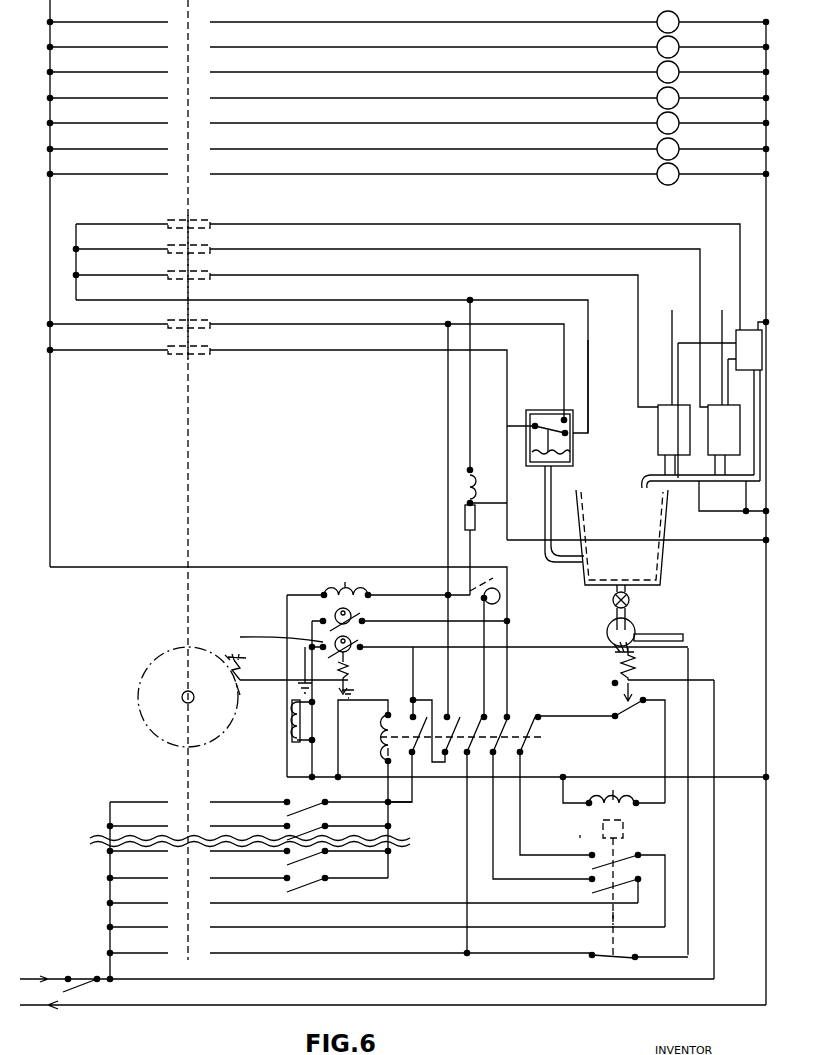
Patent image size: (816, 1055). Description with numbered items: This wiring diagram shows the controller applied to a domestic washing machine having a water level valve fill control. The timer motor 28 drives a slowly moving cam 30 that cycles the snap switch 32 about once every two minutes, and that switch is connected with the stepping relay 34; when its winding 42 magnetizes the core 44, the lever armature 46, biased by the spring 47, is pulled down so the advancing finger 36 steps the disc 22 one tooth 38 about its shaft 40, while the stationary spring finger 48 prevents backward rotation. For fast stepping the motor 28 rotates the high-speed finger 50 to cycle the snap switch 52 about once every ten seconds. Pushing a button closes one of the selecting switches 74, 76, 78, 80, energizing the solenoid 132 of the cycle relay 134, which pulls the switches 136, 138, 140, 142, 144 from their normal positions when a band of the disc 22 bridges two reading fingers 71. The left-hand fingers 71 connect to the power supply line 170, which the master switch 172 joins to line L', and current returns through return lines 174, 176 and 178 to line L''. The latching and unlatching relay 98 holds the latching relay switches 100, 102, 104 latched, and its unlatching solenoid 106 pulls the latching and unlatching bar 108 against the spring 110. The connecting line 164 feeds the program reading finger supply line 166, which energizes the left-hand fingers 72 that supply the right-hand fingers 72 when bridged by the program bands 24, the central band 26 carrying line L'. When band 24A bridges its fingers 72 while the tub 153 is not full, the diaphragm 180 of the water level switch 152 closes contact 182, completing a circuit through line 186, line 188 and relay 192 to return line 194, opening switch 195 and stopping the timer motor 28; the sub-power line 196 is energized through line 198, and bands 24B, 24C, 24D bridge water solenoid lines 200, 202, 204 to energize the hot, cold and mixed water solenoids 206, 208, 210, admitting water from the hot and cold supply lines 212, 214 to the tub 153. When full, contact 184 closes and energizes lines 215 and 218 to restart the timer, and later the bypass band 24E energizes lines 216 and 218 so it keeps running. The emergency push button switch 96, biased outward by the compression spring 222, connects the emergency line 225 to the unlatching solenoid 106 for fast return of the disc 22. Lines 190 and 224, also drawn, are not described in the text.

The disc 22 is at (140, 738).
The program bands 24 is at (182, 380).
The disc band 24A is at (200, 356).
The disc band 24B is at (200, 280).
The disc band 24C is at (205, 254).
The disc band 24D is at (210, 222).
The bypass band 24E is at (205, 330).
The central band 26 is at (182, 790).
The timer motor 28 is at (370, 590).
The slowly moving cam 30 is at (353, 612).
The snap switch 32 is at (353, 637).
The stepping relay 34 is at (264, 736).
The advancing finger 36 is at (240, 690).
The tooth 38 is at (232, 682).
The shaft 40 is at (181, 697).
The winding 42 is at (304, 722).
The core 44 is at (291, 706).
The lever armature 46 is at (299, 699).
The spring 47 is at (347, 684).
The spring finger 48 is at (240, 666).
The high-speed cam 50 is at (281, 631).
The snap switch 52 is at (352, 660).
The reading fingers 71 is at (145, 800).
The fingers 72 is at (250, 128).
The selecting switch 74 is at (318, 808).
The selecting switch 76 is at (298, 830).
The selecting switch 78 is at (318, 857).
The selecting switch 80 is at (318, 883).
The emergency push button switch 96 is at (630, 717).
The latching and unlatching relay 98 is at (583, 825).
The latching relay switch 100 is at (626, 853).
The latching relay switch 102 is at (598, 886).
The latching relay switch 104 is at (630, 953).
The unlatching solenoid 106 is at (600, 795).
The latching and unlatching bar 108 is at (612, 918).
The spring 110 is at (624, 829).
The solenoid 132 is at (380, 730).
The cycle relay 134 is at (374, 754).
The switch 136 is at (414, 710).
The switch 138 is at (442, 712).
The switch 140 is at (480, 712).
The switch 142 is at (512, 700).
The switch 144 is at (540, 728).
The water level switch 152 is at (574, 458).
The tub 153 is at (643, 523).
The connecting line 164 is at (286, 567).
The program reading finger supply line 166 is at (50, 385).
The power supply line 170 is at (108, 866).
The master switch 172 is at (79, 976).
The return line 174 is at (549, 777).
The return line 176 is at (760, 845).
The return line 178 is at (766, 208).
The diaphragm 180 is at (530, 441).
The contact 182 is at (567, 436).
The contact 184 is at (565, 421).
The line 186 is at (388, 352).
The line 188 is at (588, 348).
The conductor 190 is at (474, 436).
The relay 192 is at (478, 491).
The return line 194 is at (712, 545).
The switch 195 is at (474, 647).
The sub-power line 196 is at (76, 255).
The line 198 is at (350, 301).
The water solenoid line 200 is at (355, 276).
The water solenoid line 202 is at (358, 250).
The water solenoid line 204 is at (370, 224).
The hot water solenoid 206 is at (656, 426).
The cold water solenoid 208 is at (740, 440).
The mixed water solenoid 210 is at (762, 351).
The hot water supply line 212 is at (678, 318).
The cold water supply line 214 is at (725, 316).
The line 215 is at (562, 375).
The line 216 is at (330, 325).
The line 218 is at (446, 423).
The compression spring 222 is at (620, 672).
The conductors 224 is at (84, 843).
The emergency line 225 is at (496, 992).